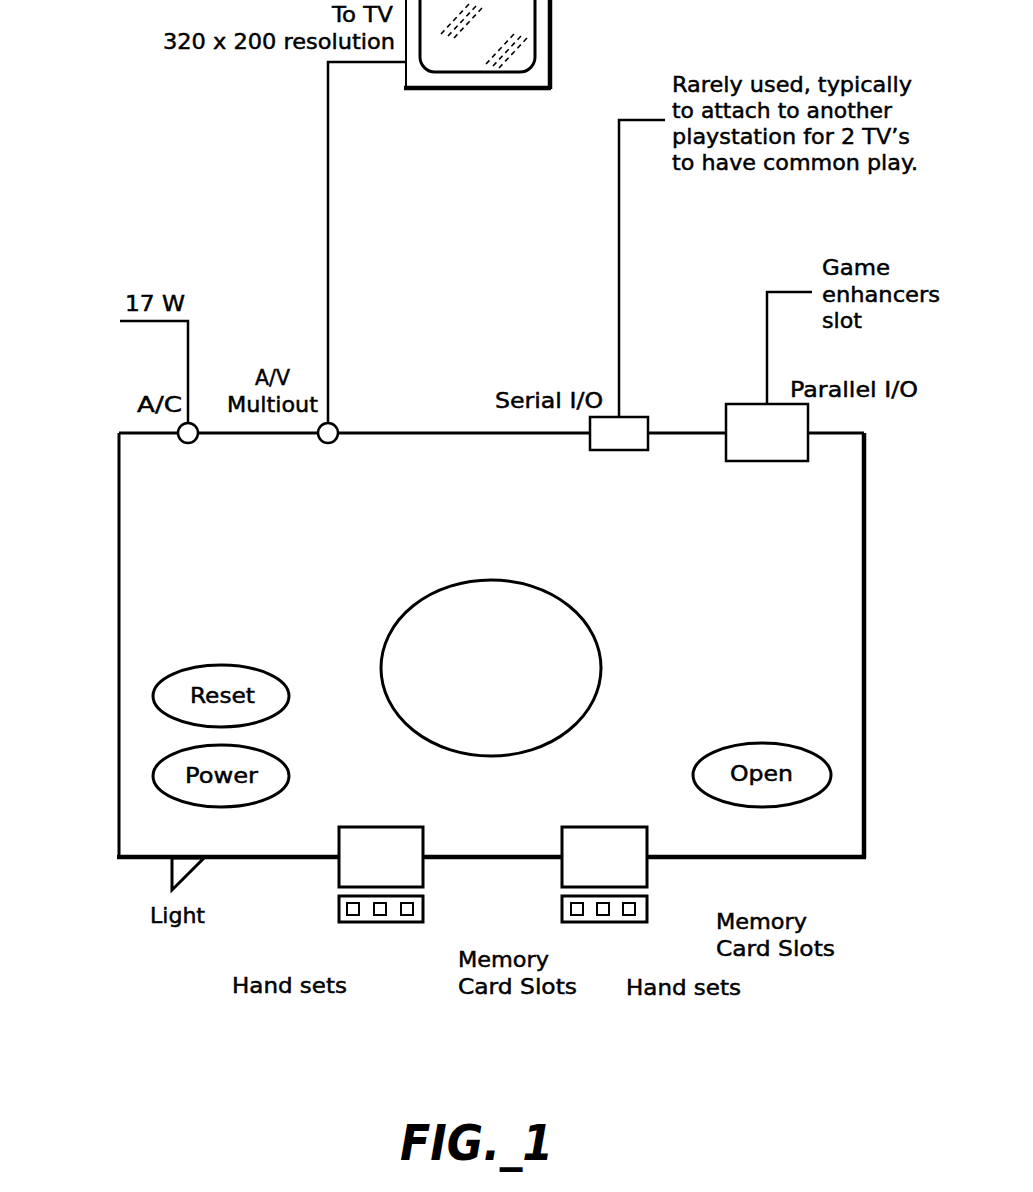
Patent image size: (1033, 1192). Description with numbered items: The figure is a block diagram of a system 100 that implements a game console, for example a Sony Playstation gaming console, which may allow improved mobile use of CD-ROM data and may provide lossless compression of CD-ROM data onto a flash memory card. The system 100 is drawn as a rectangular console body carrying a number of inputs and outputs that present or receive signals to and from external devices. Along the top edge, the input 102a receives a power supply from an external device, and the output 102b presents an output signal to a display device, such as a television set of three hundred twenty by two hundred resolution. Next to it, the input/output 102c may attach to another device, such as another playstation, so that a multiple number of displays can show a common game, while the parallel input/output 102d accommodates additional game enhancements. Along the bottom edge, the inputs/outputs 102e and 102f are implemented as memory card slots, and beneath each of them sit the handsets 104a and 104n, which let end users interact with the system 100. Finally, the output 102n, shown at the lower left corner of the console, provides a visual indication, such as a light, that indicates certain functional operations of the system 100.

The system 100 is at (865, 572).
The input 102a is at (177, 429).
The output 102b is at (338, 427).
The input/output 102c is at (633, 417).
The parallel input/output 102d is at (812, 412).
The memory card slot 102e is at (660, 872).
The memory card slot 102f is at (436, 881).
The output 102n is at (172, 868).
The handset 104a is at (597, 932).
The handset 104n is at (383, 932).